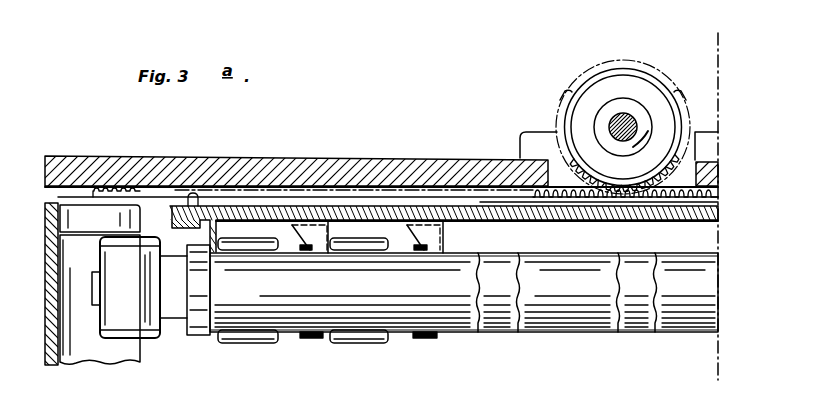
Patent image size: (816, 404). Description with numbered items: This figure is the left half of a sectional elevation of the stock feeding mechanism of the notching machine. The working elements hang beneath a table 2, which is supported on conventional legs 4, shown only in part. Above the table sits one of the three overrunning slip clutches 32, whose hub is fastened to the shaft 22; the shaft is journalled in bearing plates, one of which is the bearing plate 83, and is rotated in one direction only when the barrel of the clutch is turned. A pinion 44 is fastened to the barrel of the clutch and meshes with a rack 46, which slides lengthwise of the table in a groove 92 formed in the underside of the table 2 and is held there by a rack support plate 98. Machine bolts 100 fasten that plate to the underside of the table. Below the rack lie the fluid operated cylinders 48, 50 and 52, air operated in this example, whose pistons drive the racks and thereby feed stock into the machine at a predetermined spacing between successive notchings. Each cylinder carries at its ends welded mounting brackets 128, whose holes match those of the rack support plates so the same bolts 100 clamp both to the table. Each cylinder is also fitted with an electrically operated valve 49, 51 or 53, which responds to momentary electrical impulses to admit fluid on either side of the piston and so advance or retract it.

The table 2 is at (158, 163).
The legs 4 is at (45, 331).
The shaft 22 is at (609, 131).
The slip clutch 32 is at (628, 78).
The pinion 44 is at (580, 78).
The rack 46 is at (708, 201).
The fluid operated cylinder 48 is at (572, 334).
The electrically operated valve 49 is at (356, 342).
The fluid operated cylinder 50 is at (506, 334).
The electrically operated valve 51 is at (252, 341).
The fluid operated cylinder 52 is at (456, 334).
The electrically operated valve 53 is at (150, 340).
The bearing plate 83 is at (559, 97).
The groove 92 is at (55, 194).
The rack support plate 98 is at (610, 213).
The machine bolts 100 is at (190, 244).
The mounting brackets 128 is at (217, 229).